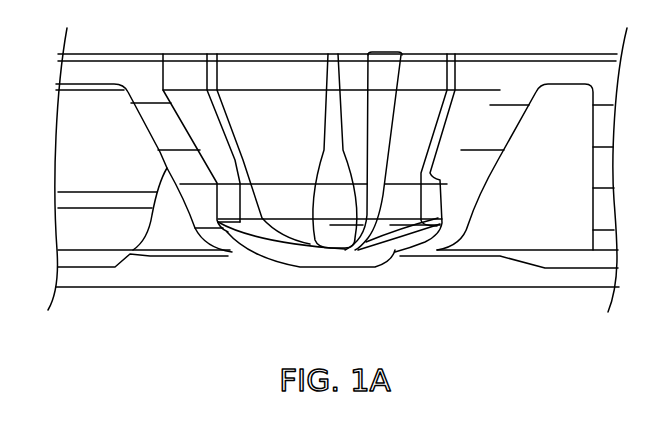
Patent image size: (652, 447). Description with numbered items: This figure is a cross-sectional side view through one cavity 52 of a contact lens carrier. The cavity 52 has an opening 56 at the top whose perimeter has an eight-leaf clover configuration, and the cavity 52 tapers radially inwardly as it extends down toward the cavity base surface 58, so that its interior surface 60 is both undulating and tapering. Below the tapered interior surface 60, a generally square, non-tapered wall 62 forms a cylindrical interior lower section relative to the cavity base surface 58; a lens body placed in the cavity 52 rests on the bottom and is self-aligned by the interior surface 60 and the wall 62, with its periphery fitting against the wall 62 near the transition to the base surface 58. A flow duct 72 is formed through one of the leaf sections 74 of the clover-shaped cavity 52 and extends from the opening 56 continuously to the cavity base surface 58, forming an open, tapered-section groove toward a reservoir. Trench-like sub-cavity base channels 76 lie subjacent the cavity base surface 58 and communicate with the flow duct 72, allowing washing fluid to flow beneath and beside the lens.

The cavity 52 is at (468, 100).
The opening 56 is at (210, 58).
The cavity base surface 58 is at (290, 208).
The interior surface 60 is at (255, 105).
The wall 62 is at (231, 212).
The flow duct 72 is at (385, 72).
The leaf section 74 is at (306, 105).
The sub-cavity base channel 76 is at (388, 250).